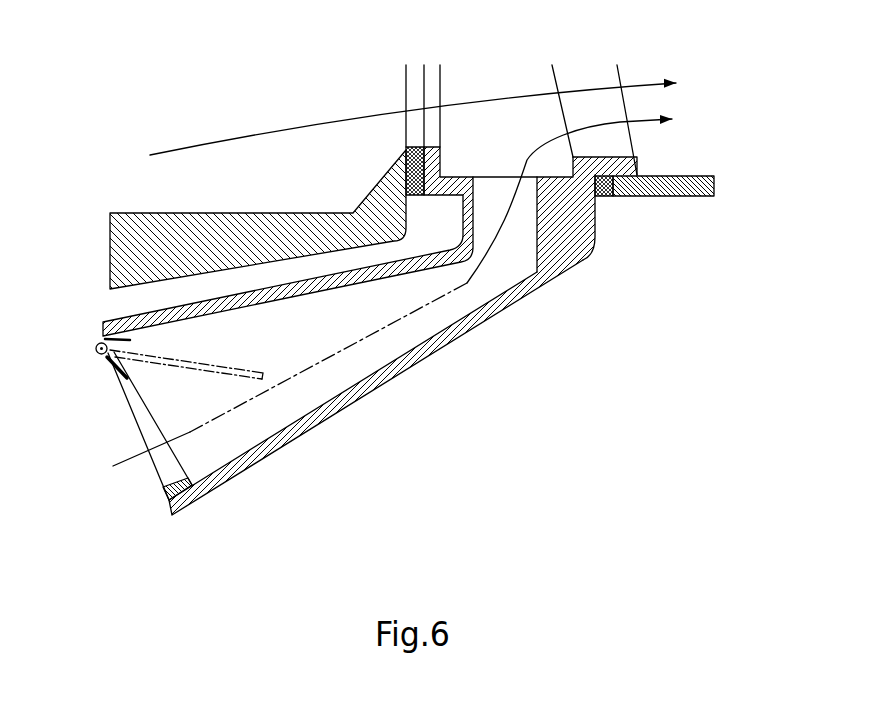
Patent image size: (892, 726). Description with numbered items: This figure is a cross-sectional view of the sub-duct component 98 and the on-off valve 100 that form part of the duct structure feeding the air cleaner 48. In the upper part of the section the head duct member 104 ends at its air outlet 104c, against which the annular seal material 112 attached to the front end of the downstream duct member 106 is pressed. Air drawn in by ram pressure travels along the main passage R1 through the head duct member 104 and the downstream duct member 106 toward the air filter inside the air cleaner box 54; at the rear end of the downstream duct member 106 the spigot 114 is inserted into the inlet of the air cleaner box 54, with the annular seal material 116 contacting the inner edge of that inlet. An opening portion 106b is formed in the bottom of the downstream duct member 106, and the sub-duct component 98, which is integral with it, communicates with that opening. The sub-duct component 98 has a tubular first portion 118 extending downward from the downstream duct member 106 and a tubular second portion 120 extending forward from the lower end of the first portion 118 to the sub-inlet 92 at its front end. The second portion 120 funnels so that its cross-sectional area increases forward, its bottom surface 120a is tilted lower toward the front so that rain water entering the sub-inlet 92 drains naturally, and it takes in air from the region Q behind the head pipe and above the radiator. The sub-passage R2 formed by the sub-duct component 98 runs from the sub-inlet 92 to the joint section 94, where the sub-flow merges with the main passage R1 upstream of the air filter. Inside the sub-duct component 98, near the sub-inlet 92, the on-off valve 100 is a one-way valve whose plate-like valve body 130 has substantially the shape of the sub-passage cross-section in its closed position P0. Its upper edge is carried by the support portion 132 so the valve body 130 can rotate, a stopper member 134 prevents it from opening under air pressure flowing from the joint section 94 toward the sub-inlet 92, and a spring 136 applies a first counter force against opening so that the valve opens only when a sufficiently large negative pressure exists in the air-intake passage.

The air cleaner 48 is at (709, 207).
The air cleaner box 54 is at (684, 199).
The sub-inlet 92 is at (146, 466).
The joint section 94 is at (518, 119).
The sub-duct component 98 is at (342, 416).
The on-off valve 100 is at (121, 394).
The head duct member 104 is at (101, 254).
The air outlet 104c is at (398, 106).
The downstream duct member 106 is at (557, 193).
The opening portion 106b is at (503, 178).
The annular seal material 112 is at (410, 146).
The spigot 114 is at (637, 175).
The annular seal material 116 is at (603, 197).
The first portion 118 is at (520, 230).
The second portion 120 is at (408, 337).
The bottom surface 120a is at (338, 396).
The valve body 130 is at (178, 459).
The support portion 132 is at (96, 351).
The stopper member 134 is at (165, 488).
The spring 136 is at (115, 368).
The main passage R1 is at (224, 141).
The sub-passage R2 is at (465, 340).
The closed position P0 is at (190, 490).
The region Q is at (324, 492).